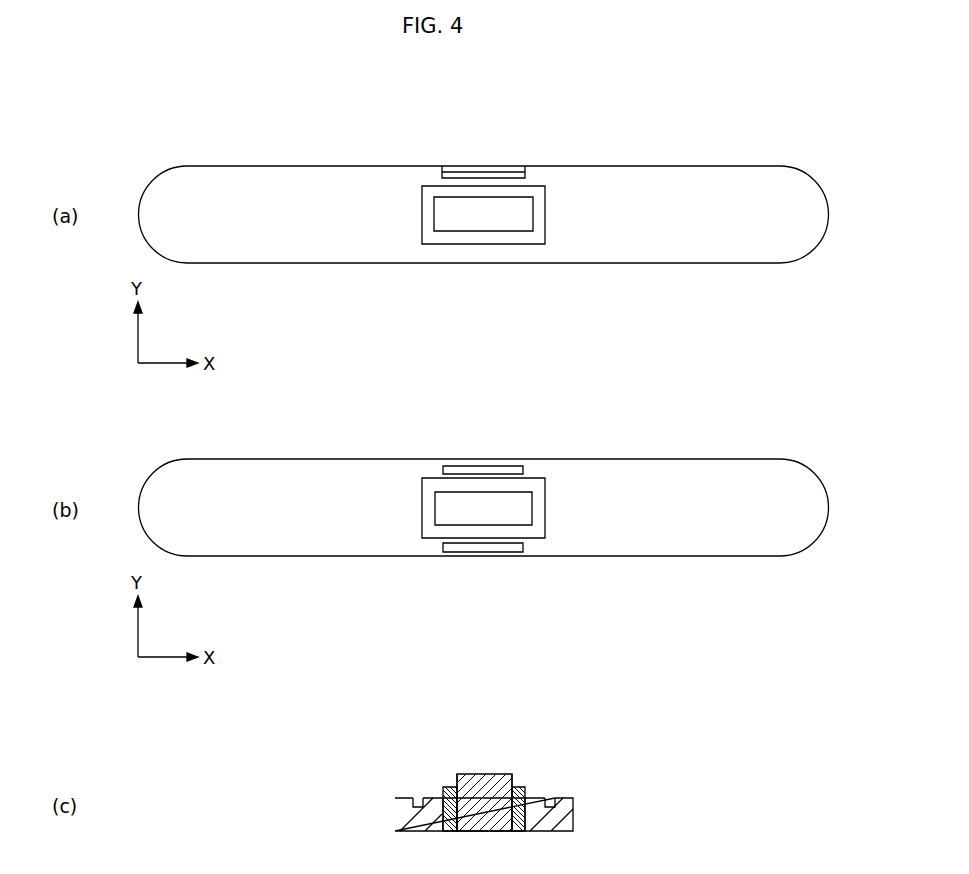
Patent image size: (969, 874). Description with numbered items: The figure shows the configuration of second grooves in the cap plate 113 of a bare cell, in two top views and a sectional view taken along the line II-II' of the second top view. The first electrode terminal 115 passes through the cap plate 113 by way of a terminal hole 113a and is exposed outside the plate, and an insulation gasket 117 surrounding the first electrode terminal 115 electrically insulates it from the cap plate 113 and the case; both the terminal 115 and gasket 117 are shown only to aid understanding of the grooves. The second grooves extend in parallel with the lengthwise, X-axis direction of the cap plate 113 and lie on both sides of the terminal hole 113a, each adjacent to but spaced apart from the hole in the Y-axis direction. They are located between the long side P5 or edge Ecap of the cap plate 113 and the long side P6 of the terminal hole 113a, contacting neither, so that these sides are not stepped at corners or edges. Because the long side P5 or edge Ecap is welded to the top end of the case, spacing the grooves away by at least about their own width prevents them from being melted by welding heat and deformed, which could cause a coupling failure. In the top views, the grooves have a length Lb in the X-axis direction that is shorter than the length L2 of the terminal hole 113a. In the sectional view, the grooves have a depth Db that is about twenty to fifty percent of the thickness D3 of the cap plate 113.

The cap plate 113 is at (253, 263).
The terminal hole 113a is at (445, 244).
The first electrode terminal 115 is at (487, 221).
The insulation gasket 117 is at (517, 237).
The long side of the cap plate P5 is at (698, 275).
The long side of the terminal hole P6 is at (467, 258).
The edge of the cap plate Ecap is at (707, 459).
The length of the terminal hole L2 is at (545, 104).
The length of the second grooves Lb is at (525, 140).
The depth of the second grooves Db is at (555, 808).
The thickness of the cap plate D3 is at (573, 798).
The section line II-II' II is at (483, 413).